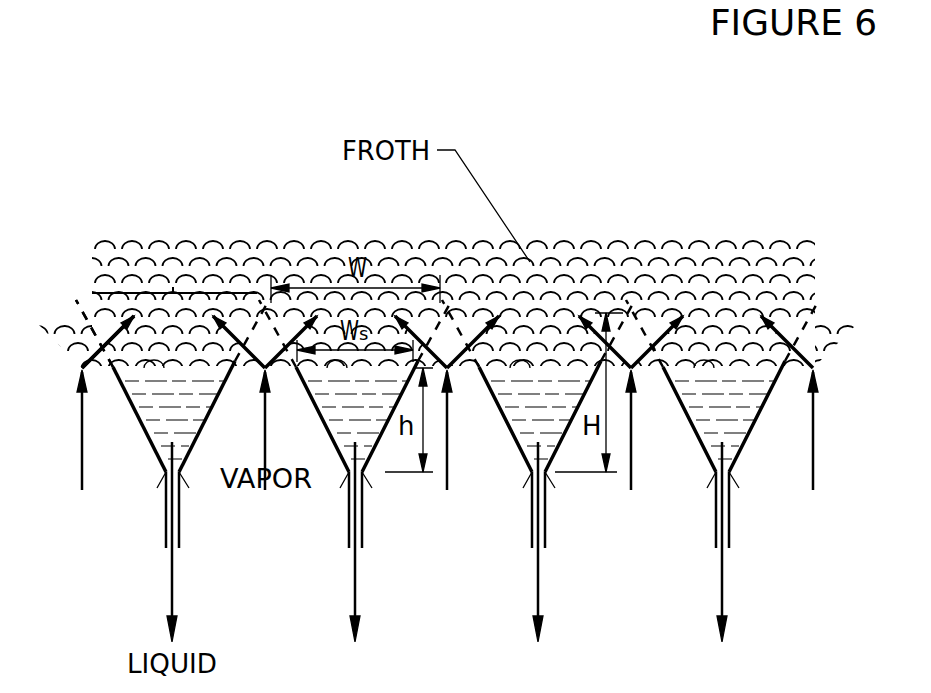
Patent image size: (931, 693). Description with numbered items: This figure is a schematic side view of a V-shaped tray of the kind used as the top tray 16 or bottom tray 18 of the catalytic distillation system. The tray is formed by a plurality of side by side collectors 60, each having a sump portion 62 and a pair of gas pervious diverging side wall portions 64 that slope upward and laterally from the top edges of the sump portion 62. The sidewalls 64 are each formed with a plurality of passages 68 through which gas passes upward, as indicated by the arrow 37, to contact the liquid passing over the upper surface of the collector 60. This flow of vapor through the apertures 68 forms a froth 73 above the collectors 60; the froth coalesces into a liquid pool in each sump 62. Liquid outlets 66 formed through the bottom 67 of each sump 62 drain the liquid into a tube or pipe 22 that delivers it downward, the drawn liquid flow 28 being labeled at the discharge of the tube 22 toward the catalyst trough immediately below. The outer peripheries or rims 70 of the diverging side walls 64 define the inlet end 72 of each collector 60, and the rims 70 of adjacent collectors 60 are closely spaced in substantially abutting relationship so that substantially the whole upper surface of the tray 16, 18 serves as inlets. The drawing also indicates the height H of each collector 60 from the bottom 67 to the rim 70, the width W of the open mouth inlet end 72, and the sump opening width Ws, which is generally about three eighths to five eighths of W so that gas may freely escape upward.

The top tray 16 is at (776, 501).
The bottom tray 18 is at (747, 442).
The tube or pipe 22 is at (180, 538).
The liquid outlet flow 28 is at (175, 597).
The arrow 37 is at (80, 447).
The collector 60 is at (232, 370).
The sump portion 62 is at (130, 402).
The gas pervious diverging side wall portions 64 is at (243, 340).
The liquid outlets 66 is at (181, 475).
The bottom of the sump 67 is at (165, 475).
The passages 68 is at (100, 340).
The outer peripheries or rims 70 is at (90, 320).
The inlet end 72 is at (174, 261).
The froth 73 is at (318, 302).